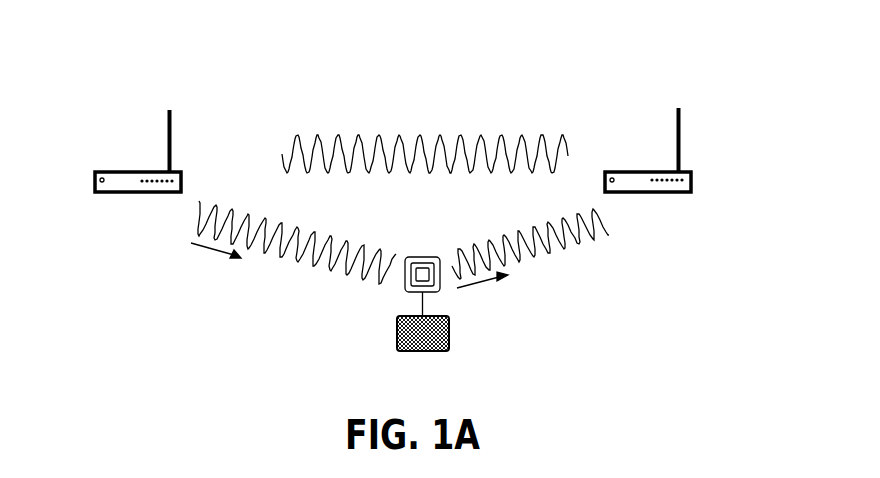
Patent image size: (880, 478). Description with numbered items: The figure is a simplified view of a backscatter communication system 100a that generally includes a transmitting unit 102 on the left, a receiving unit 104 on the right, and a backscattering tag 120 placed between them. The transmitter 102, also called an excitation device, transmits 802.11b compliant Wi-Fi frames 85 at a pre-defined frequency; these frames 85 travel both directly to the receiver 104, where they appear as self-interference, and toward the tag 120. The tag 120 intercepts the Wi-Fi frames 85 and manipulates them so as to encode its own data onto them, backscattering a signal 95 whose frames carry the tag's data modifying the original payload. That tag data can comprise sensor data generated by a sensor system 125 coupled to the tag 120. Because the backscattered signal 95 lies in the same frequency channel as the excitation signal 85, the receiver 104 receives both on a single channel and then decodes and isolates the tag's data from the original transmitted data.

The backscatter communication system 100a is at (94, 57).
The transmitting unit 102 is at (137, 194).
The receiving unit 104 is at (648, 193).
The 802.11b compliant Wi-Fi frames 85 is at (283, 222).
The backscattered signal 95 is at (566, 246).
The backscattering tag 120 is at (422, 257).
The sensor system 125 is at (449, 333).